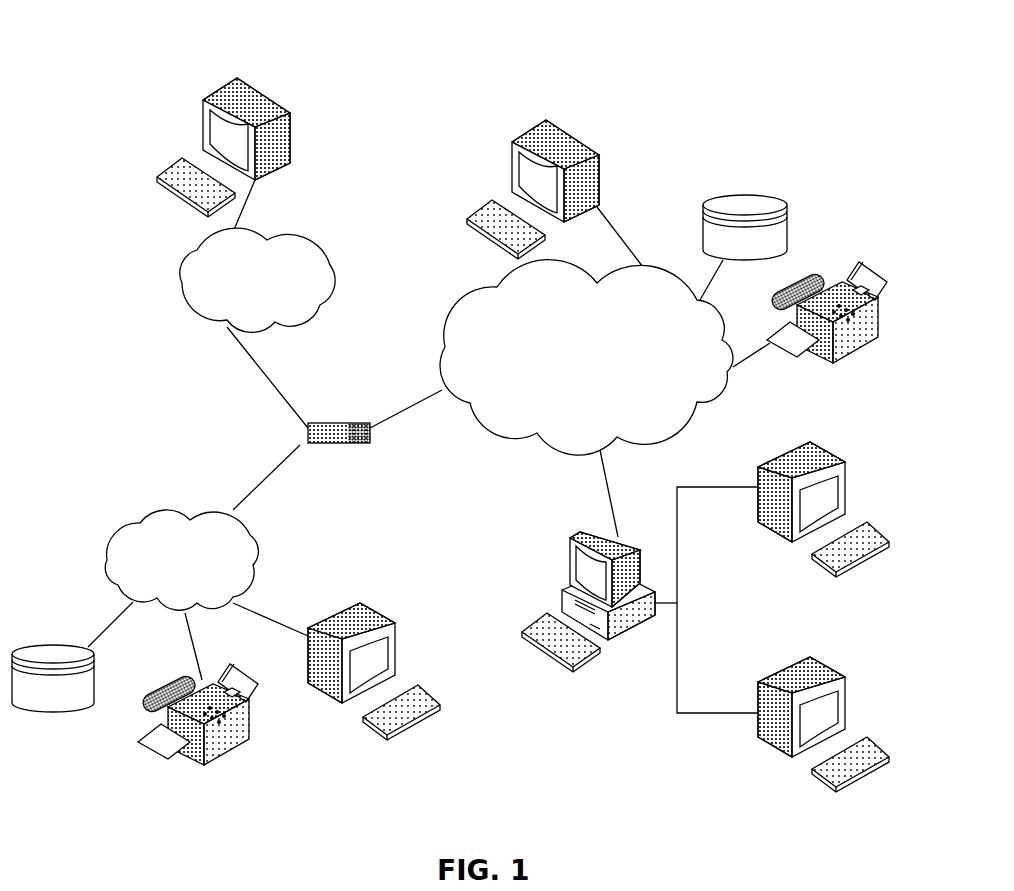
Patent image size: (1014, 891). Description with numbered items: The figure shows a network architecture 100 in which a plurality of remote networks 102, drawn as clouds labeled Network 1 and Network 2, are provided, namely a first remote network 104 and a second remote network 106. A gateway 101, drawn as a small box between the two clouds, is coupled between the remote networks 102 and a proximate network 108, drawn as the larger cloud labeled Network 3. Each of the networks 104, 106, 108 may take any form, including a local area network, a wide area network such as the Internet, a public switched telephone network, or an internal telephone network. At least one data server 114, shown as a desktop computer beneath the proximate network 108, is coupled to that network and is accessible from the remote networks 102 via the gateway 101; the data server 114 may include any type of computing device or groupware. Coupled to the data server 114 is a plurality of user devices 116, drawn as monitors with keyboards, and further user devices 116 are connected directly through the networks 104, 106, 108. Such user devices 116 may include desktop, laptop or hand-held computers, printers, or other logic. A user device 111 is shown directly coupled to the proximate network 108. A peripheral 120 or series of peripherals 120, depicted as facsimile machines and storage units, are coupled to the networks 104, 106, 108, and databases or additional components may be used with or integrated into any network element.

The architecture 100 is at (130, 58).
The gateway 101 is at (322, 422).
The remote networks 102 is at (160, 342).
The first remote network 104 is at (110, 535).
The second remote network 106 is at (330, 252).
The proximate network 108 is at (693, 423).
The user device 111 is at (598, 152).
The data server 114 is at (570, 552).
The user devices 116 is at (292, 118).
The peripheral 120 is at (787, 202).